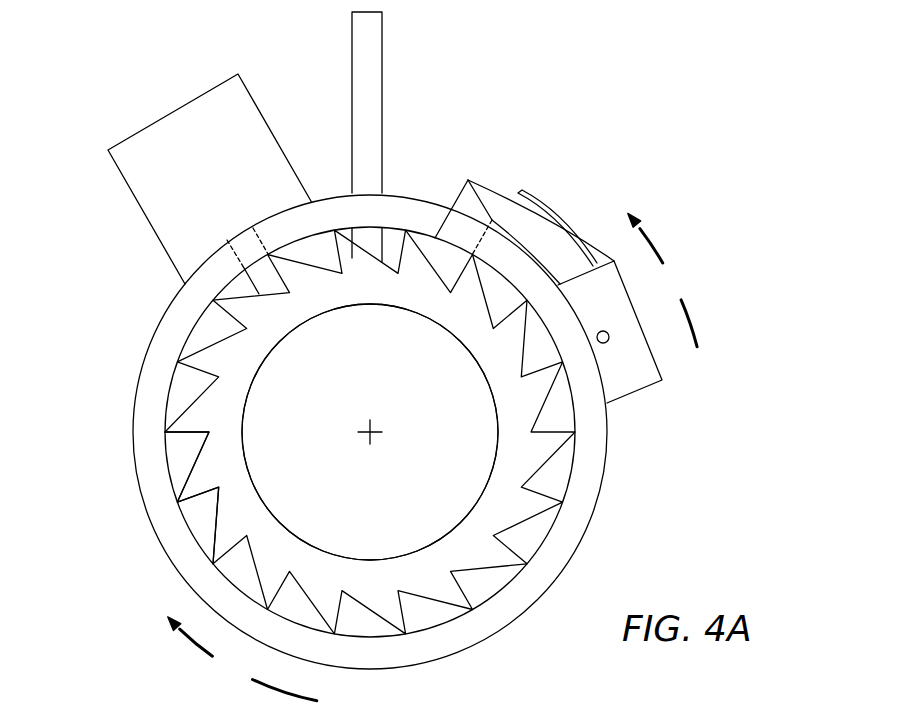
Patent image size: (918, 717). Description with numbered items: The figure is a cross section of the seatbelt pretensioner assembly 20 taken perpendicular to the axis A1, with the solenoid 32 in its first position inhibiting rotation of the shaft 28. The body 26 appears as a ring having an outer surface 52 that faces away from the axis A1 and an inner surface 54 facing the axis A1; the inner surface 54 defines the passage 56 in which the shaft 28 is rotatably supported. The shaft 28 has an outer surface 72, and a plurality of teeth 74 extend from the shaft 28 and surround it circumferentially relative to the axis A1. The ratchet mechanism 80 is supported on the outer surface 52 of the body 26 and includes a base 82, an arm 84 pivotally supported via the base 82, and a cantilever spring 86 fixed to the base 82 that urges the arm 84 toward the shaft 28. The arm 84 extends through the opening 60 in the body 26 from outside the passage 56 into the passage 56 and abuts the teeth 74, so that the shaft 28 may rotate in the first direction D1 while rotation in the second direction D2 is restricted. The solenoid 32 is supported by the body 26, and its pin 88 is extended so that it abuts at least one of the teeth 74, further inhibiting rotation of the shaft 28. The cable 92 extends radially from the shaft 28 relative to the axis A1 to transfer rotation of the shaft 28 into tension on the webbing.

The seatbelt pretensioner assembly 20 is at (502, 104).
The body 26 is at (145, 385).
The shaft 28 is at (398, 528).
The solenoid 32 is at (150, 172).
The outer surface 52 is at (385, 667).
The inner surface 54 is at (200, 509).
The passage 56 is at (180, 453).
The opening 60 is at (450, 243).
The outer surface of the shaft 72 is at (480, 497).
The teeth 74 is at (542, 445).
The ratchet mechanism 80 is at (643, 405).
The base 82 is at (647, 363).
The arm 84 is at (470, 180).
The spring 86 is at (540, 215).
The pin 88 is at (262, 276).
The cable 92 is at (362, 63).
The axis A1 is at (368, 425).
The first direction D1 is at (242, 659).
The second direction D2 is at (662, 279).